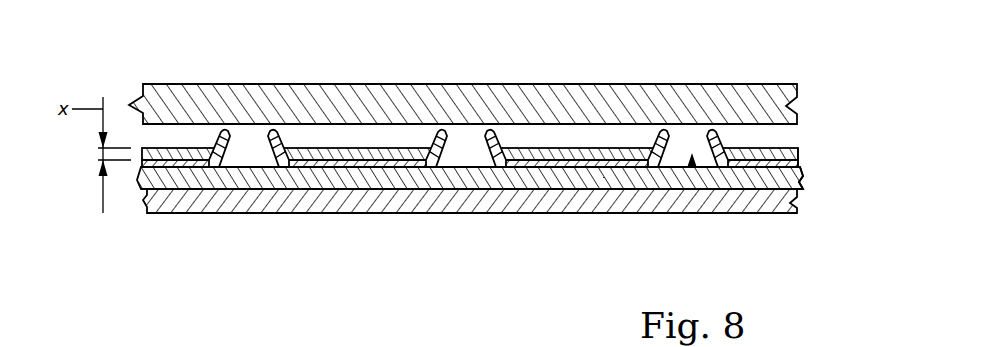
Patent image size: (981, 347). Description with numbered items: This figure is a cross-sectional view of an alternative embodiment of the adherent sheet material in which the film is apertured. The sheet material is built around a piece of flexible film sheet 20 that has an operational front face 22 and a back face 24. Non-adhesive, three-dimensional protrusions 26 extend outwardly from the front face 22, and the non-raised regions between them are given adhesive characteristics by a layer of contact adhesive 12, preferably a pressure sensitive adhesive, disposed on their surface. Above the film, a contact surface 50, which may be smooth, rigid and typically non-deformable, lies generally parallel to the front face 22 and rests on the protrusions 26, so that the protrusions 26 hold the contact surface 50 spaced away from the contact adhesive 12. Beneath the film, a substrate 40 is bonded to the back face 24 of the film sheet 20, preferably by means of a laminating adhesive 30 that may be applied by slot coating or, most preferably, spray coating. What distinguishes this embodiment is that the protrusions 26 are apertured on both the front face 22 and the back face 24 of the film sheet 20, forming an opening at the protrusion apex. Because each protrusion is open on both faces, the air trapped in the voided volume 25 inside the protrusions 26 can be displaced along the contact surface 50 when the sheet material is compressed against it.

The contact adhesive 12 is at (393, 168).
The flexible film sheet 20 is at (768, 167).
The operational front face 22 is at (766, 159).
The back face 24 is at (360, 167).
The voided volume 25 is at (692, 167).
The protrusions 26 is at (510, 128).
The laminating adhesive 30 is at (802, 188).
The substrate 40 is at (529, 207).
The contact surface 50 is at (337, 102).